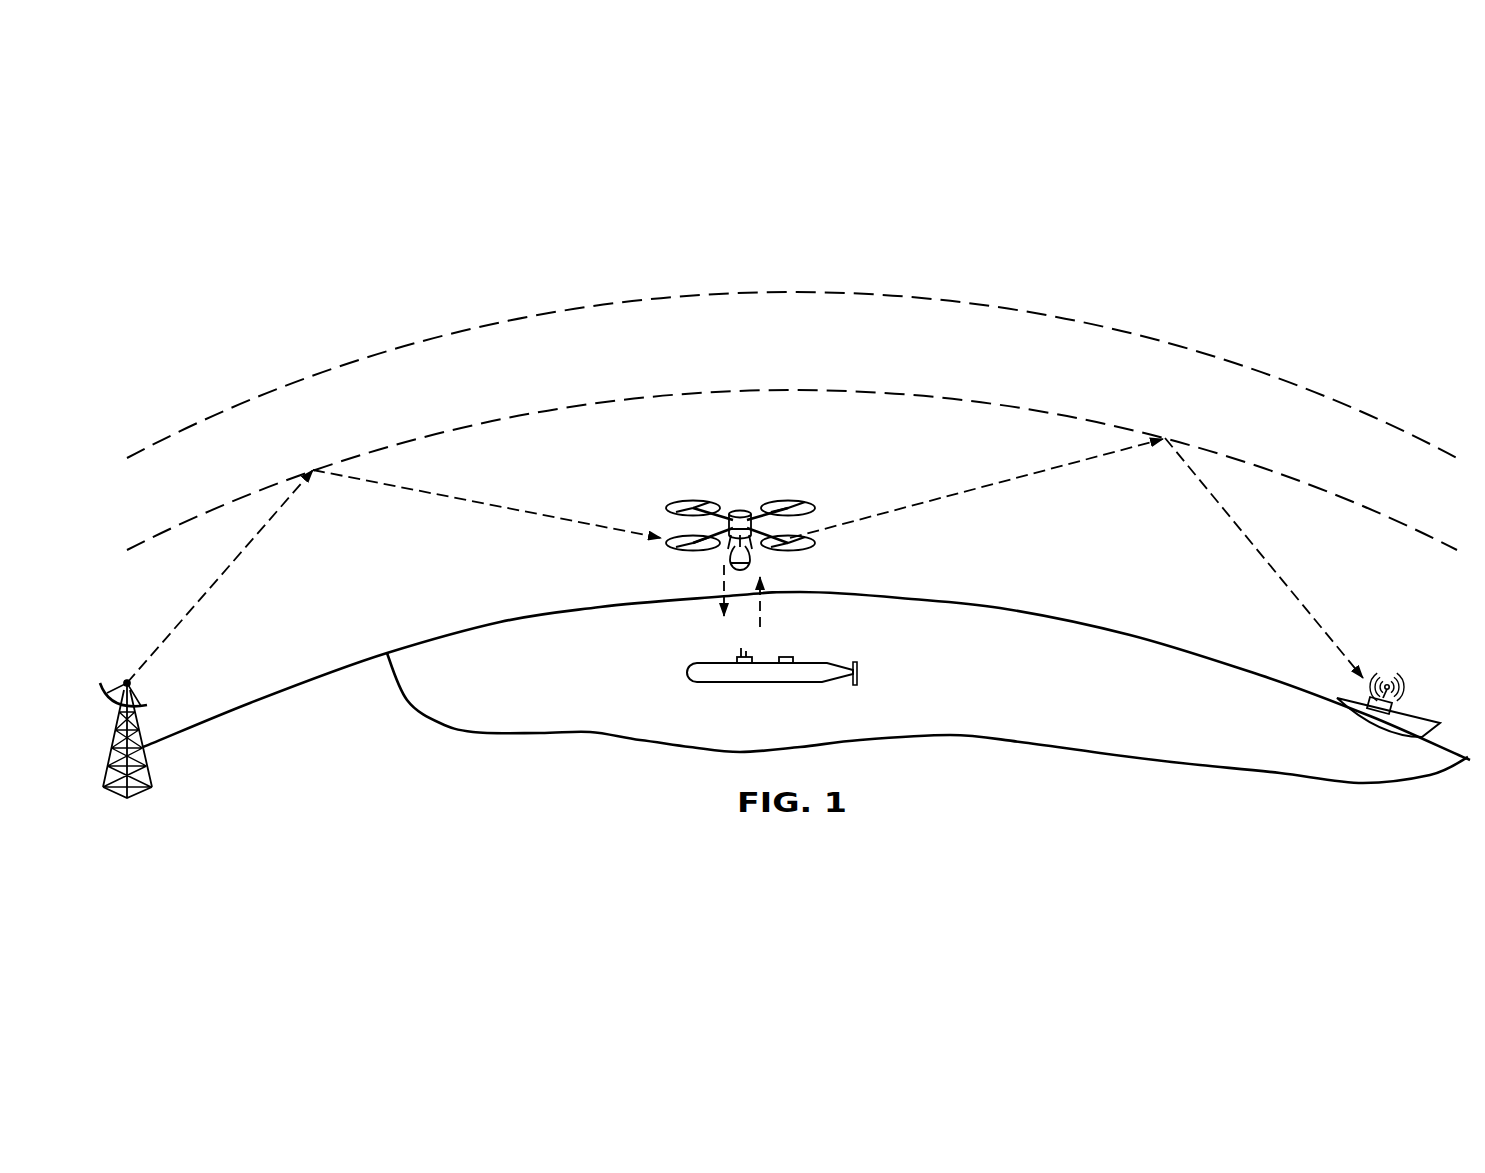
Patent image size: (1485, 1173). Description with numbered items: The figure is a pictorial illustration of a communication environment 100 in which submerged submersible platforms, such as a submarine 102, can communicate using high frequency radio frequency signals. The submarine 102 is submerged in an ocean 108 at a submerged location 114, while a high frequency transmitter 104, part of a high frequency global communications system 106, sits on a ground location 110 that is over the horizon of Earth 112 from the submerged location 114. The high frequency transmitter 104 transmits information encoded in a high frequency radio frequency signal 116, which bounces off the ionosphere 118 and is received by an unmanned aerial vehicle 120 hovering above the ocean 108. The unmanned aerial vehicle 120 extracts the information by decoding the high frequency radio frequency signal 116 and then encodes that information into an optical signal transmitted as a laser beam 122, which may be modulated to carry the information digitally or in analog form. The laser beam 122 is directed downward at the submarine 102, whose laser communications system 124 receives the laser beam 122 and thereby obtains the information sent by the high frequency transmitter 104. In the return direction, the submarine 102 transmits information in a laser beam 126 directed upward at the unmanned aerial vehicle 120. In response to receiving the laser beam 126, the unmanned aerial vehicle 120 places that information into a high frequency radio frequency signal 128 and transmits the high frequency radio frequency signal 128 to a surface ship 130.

The communication environment 100 is at (1130, 296).
The submarine 102 is at (815, 649).
The high frequency transmitter 104 is at (114, 680).
The high frequency global communications system 106 is at (795, 496).
The ocean 108 is at (1007, 612).
The ground location 110 is at (160, 770).
The Earth 112 is at (490, 802).
The submerged location 114 is at (660, 672).
The high frequency radio frequency signal 116 is at (490, 506).
The ionosphere 118 is at (815, 360).
The unmanned aerial vehicle 120 is at (745, 505).
The laser beam 122 is at (721, 584).
The laser communications system 124 is at (790, 657).
The laser beam 126 is at (763, 610).
The high frequency radio frequency signal 128 is at (1304, 586).
The surface ship 130 is at (1418, 719).